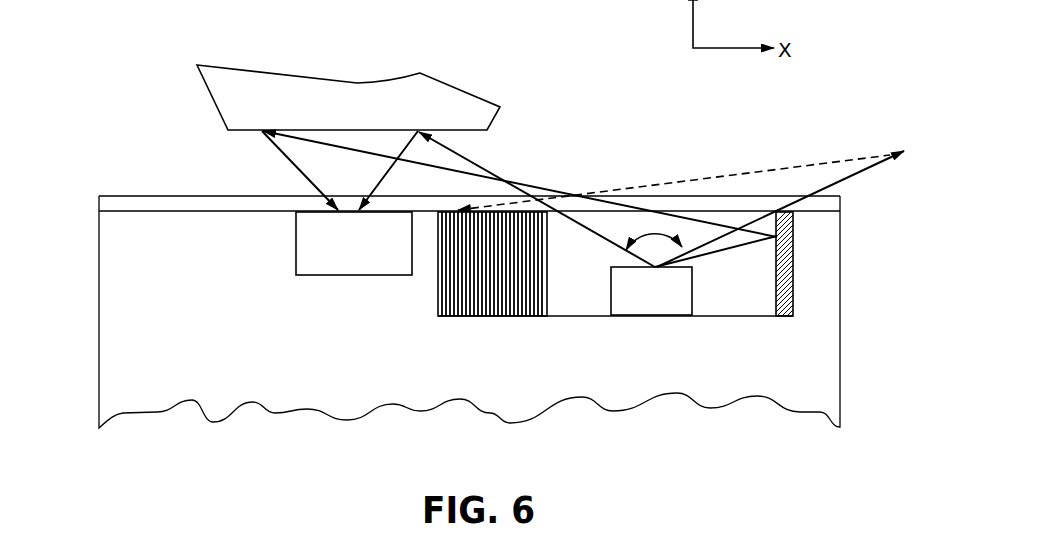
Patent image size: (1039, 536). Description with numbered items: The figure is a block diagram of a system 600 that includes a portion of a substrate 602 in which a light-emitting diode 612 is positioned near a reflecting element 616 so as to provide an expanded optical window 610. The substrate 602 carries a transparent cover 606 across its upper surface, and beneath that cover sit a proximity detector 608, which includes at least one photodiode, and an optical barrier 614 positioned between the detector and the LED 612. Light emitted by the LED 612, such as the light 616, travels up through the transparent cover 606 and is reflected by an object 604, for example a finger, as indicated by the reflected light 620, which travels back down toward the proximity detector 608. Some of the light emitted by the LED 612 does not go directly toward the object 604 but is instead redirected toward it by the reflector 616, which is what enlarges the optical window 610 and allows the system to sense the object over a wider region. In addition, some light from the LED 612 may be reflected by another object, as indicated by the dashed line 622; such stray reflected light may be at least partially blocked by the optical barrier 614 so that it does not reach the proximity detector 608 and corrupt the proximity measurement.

The system 600 is at (146, 56).
The substrate 602 is at (130, 413).
The object 604 is at (308, 108).
The transparent cover 606 is at (162, 196).
The proximity detector 608 is at (296, 233).
The expanded optical window 610 is at (685, 206).
The light-emitting diode 612 is at (647, 313).
The optical barrier 614 is at (442, 298).
The reflecting element 616 is at (465, 158).
The reflected light 620 is at (293, 163).
The light reflected by another object 622 is at (820, 162).